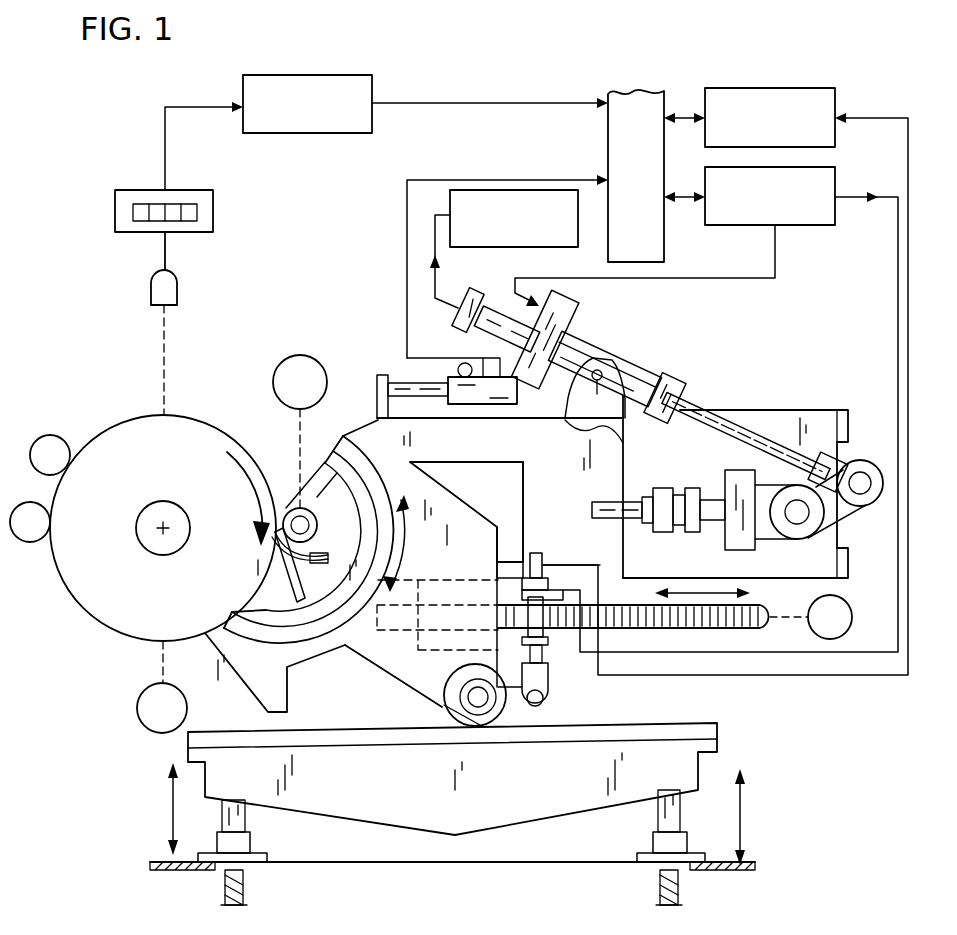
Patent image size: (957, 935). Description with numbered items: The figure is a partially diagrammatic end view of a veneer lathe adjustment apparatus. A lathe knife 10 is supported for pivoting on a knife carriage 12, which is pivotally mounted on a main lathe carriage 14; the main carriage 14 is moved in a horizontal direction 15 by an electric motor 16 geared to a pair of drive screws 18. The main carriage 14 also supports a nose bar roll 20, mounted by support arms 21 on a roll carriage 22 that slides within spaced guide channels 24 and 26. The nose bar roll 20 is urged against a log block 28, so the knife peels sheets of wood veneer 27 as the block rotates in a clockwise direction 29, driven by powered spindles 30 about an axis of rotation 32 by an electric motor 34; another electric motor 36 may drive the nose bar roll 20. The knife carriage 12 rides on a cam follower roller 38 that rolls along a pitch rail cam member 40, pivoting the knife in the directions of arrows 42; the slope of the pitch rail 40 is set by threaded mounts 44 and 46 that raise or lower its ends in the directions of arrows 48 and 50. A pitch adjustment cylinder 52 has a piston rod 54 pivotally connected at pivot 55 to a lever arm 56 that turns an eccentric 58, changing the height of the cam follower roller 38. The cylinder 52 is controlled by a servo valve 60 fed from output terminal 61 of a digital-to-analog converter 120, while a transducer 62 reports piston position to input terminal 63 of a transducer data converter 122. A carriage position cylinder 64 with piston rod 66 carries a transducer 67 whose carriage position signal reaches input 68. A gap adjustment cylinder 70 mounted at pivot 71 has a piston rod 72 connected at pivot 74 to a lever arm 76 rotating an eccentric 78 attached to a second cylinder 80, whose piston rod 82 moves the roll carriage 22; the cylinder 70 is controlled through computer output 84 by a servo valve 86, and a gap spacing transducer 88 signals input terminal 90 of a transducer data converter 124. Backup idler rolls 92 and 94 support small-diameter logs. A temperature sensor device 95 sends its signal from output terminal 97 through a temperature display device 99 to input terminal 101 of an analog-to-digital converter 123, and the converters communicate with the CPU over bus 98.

The lathe knife 10 is at (273, 568).
The knife carriage 12 is at (447, 505).
The main lathe carriage 14 is at (562, 424).
The horizontal direction 15 is at (713, 590).
The electric motor 16 is at (850, 630).
The drive screws 18 is at (712, 630).
The nose bar roll 20 is at (323, 500).
The support arms 21 is at (318, 497).
The roll carriage 22 is at (513, 475).
The guide channel 24 is at (478, 460).
The guide channel 26 is at (513, 565).
The wood veneer 27 is at (308, 585).
The log block 28 is at (78, 612).
The clockwise direction 29 is at (250, 490).
The powered spindles 30 is at (163, 500).
The axis of rotation 32 is at (162, 528).
The electric motor 34 is at (140, 700).
The electric motor 36 is at (302, 352).
The cam follower roller 38 is at (440, 705).
The pitch rail cam member 40 is at (650, 720).
The directions of arrows 42 is at (405, 537).
The threaded mount 44 is at (250, 842).
The threaded mount 46 is at (655, 842).
The direction of arrow 48 is at (170, 790).
The direction of arrow 50 is at (742, 810).
The pitch adjustment cylinder 52 is at (528, 615).
The piston rod 54 is at (543, 662).
The pivot 55 is at (548, 700).
The lever arm 56 is at (505, 710).
The eccentric 58 is at (470, 678).
The servo valve 60 is at (565, 590).
The output terminal 61 is at (890, 196).
The transducer 62 is at (543, 562).
The input terminal 63 is at (884, 115).
The main lathe carriage position cylinder 64 is at (465, 398).
The piston rod 66 is at (402, 378).
The transducer 67 is at (480, 345).
The input 68 is at (407, 282).
The gap adjustment cylinder 70 is at (652, 382).
The pivot 71 is at (595, 390).
The piston rod 72 is at (730, 425).
The pivot 74 is at (862, 478).
The lever arm 76 is at (840, 512).
The eccentric 78 is at (780, 540).
The second cylinder 80 is at (676, 490).
The piston rod 82 is at (628, 502).
The computer output 84 is at (680, 278).
The servo valve 86 is at (560, 302).
The gap spacing transducer 88 is at (500, 325).
The input terminal 90 is at (433, 245).
The backup idler roll 92 is at (62, 433).
The backup idler roll 94 is at (30, 542).
The temperature sensor device 95 is at (182, 288).
The output terminal 97 is at (170, 250).
The temperature display device 99 is at (213, 200).
The input terminal 101 is at (165, 135).
The bus 98 is at (606, 140).
The digital-to-analog converter 120 is at (756, 226).
The transducer data converter 122 is at (745, 72).
The analog-to-digital converter 123 is at (300, 133).
The transducer data converter 124 is at (448, 190).